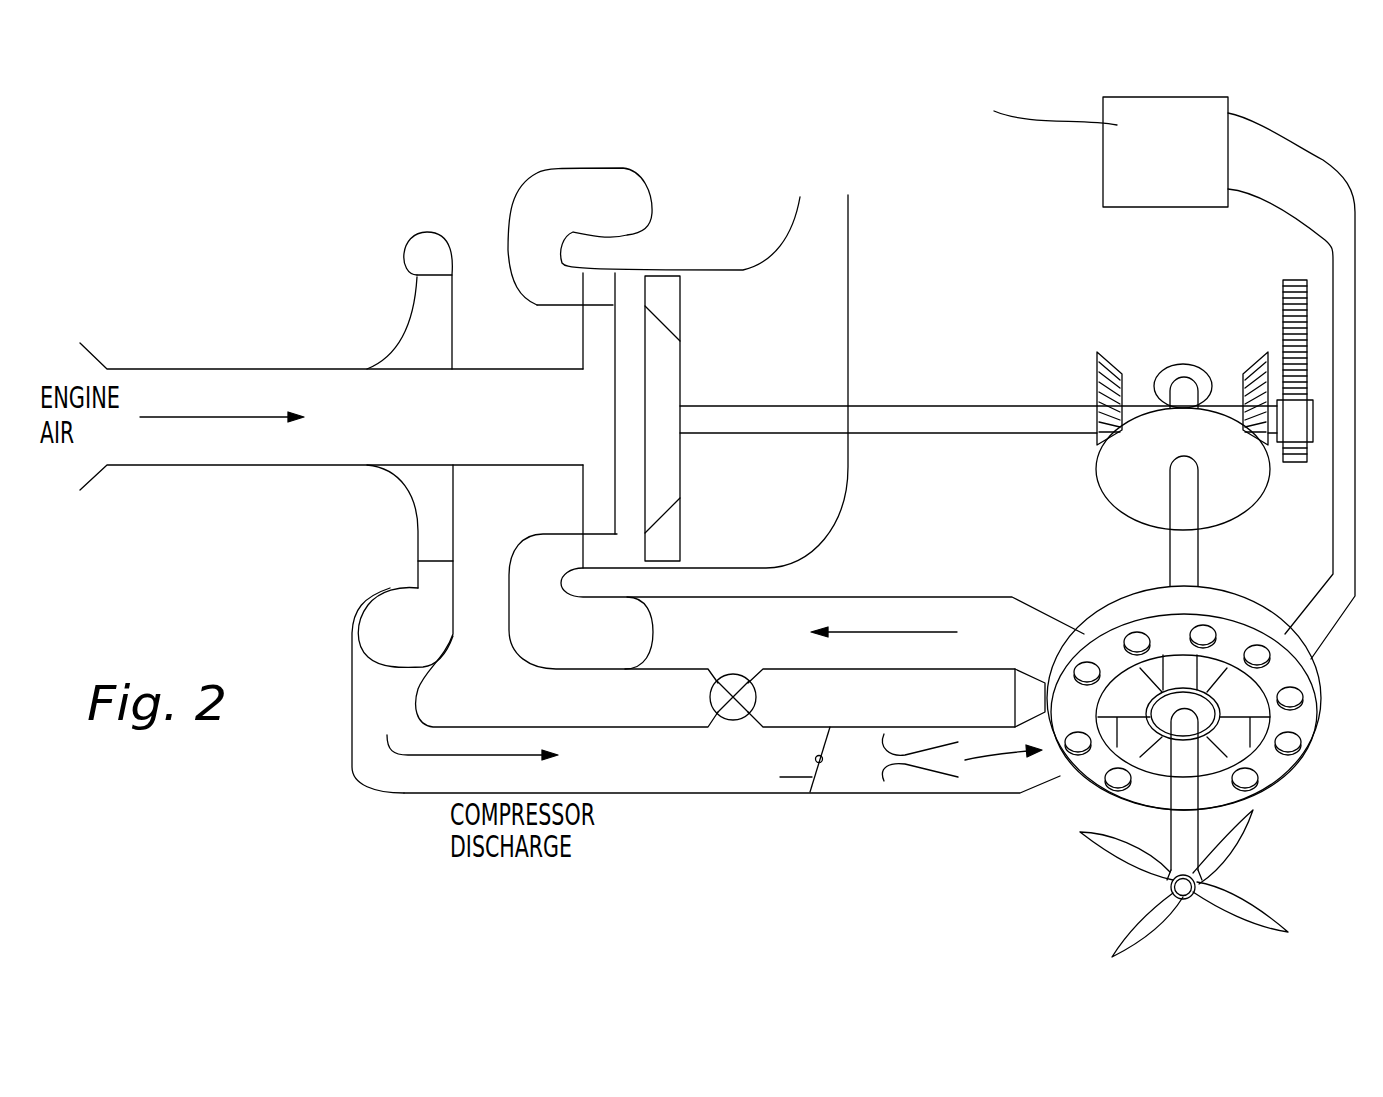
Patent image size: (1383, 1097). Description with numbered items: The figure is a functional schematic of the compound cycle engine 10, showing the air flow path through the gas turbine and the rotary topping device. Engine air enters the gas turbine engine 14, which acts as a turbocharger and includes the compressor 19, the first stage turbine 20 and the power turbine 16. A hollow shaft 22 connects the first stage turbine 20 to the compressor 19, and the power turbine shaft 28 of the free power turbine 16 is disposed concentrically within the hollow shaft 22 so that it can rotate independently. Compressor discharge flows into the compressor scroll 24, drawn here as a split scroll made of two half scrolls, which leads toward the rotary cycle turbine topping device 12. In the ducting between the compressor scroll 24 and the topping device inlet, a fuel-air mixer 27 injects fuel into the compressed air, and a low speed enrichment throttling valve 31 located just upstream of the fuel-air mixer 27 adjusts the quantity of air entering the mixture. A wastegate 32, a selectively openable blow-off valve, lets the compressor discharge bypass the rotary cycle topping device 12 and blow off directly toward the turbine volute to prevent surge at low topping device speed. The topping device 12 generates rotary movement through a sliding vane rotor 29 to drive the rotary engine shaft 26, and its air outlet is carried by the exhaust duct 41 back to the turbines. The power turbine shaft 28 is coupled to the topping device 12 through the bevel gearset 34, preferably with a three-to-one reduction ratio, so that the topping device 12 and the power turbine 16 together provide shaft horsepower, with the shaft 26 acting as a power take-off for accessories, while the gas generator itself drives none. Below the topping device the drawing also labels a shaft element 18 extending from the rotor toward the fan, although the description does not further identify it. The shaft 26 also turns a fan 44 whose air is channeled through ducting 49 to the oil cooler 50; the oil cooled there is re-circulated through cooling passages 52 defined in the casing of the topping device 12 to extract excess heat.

The compound cycle engine 10 is at (199, 280).
The rotary cycle turbine topping device 12 is at (1268, 800).
The gas turbine engine 14 is at (478, 243).
The power turbine 16 is at (663, 323).
The output shaft 18 is at (1183, 825).
The compressor 19 is at (427, 333).
The first stage turbine 20 is at (593, 330).
The hollow shaft 22 is at (518, 418).
The compressor scroll 24 is at (389, 625).
The rotary engine shaft 26 is at (1179, 549).
The fuel-air mixer 27 is at (907, 762).
The power turbine shaft 28 is at (958, 420).
The sliding vane rotor 29 is at (1160, 762).
The low speed enrichment throttling valve 31 is at (780, 777).
The wastegate 32 is at (733, 675).
The bevel gearset 34 is at (1100, 386).
The exhaust duct 41 is at (917, 607).
The fan 44 is at (1127, 859).
The ducting 49 is at (1339, 501).
The oil cooler 50 is at (1128, 179).
The cooling passages 52 is at (1247, 780).